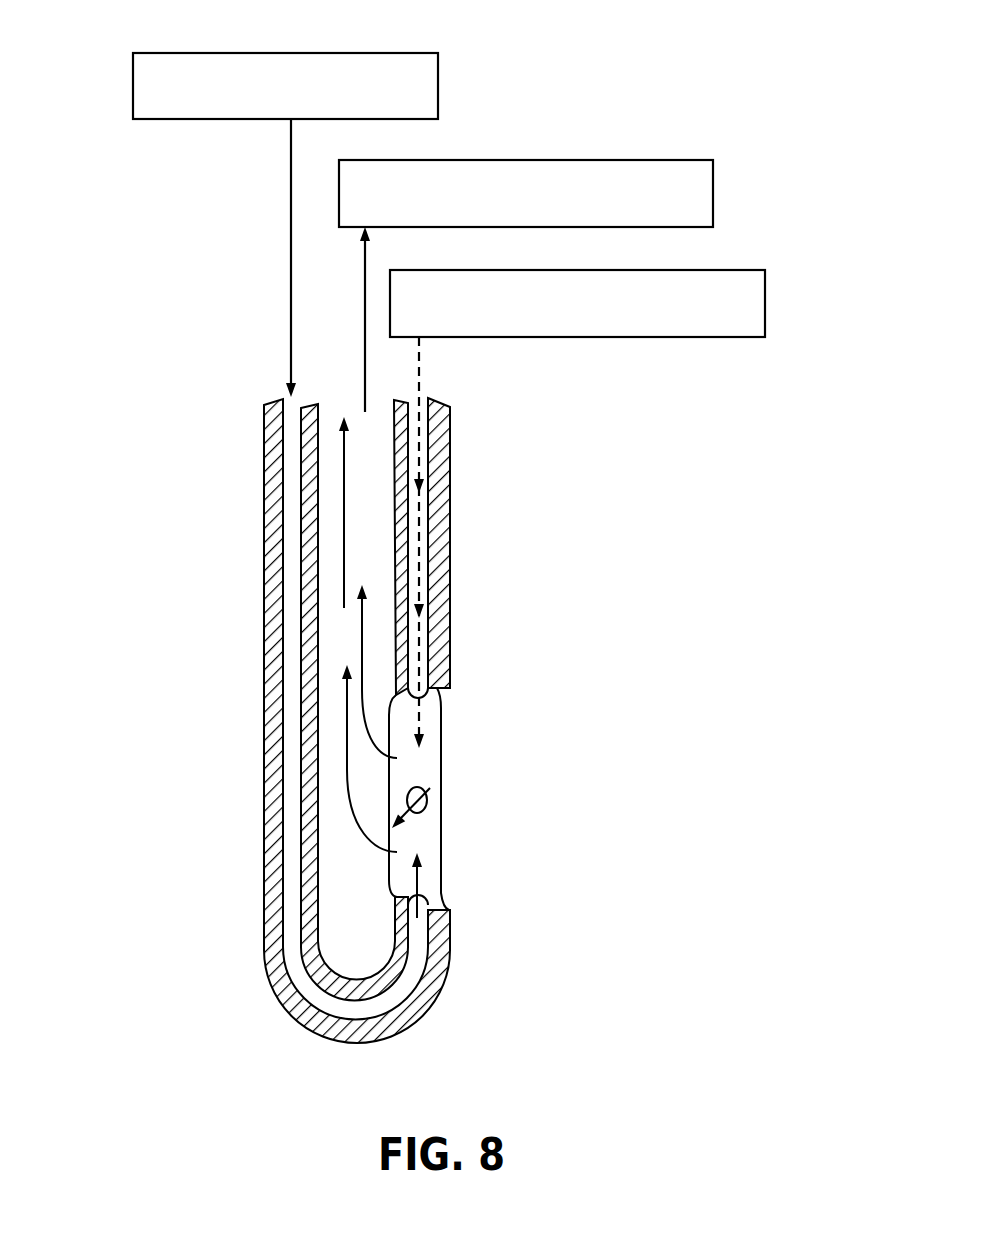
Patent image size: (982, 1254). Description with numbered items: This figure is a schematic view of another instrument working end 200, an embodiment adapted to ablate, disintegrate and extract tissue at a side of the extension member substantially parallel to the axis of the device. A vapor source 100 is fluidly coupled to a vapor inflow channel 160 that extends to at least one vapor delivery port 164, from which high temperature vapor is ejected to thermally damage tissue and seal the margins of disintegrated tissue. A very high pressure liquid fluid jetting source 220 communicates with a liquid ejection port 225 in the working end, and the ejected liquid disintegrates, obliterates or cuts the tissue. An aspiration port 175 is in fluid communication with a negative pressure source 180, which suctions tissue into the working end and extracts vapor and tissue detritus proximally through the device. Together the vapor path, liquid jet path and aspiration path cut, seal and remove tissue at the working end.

The vapor source 100 is at (291, 110).
The negative pressure source 180 is at (540, 220).
The high pressure liquid fluid jetting source 220 is at (590, 328).
The working end 200 is at (570, 70).
The vapor inflow channel 160 is at (286, 556).
The aspiration port 175 is at (348, 633).
The liquid ejection port 225 is at (442, 708).
The vapor delivery port 164 is at (426, 903).